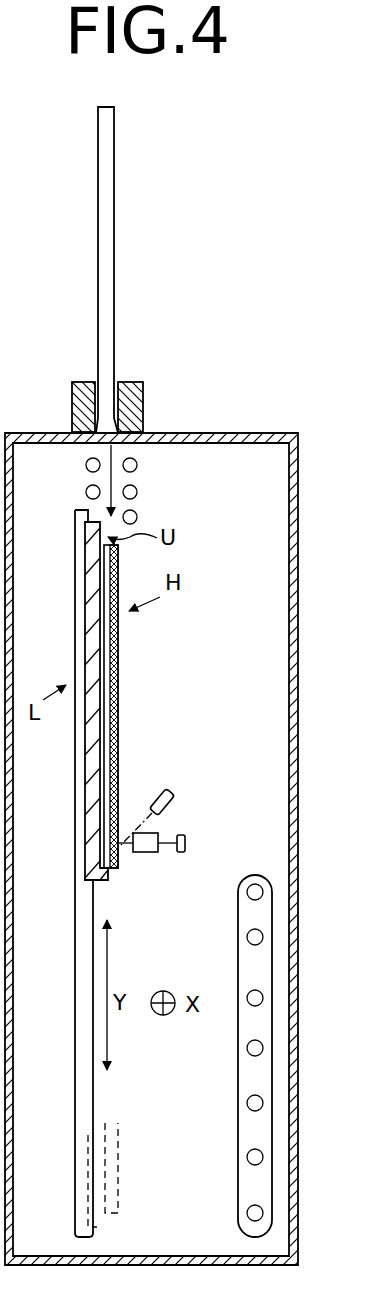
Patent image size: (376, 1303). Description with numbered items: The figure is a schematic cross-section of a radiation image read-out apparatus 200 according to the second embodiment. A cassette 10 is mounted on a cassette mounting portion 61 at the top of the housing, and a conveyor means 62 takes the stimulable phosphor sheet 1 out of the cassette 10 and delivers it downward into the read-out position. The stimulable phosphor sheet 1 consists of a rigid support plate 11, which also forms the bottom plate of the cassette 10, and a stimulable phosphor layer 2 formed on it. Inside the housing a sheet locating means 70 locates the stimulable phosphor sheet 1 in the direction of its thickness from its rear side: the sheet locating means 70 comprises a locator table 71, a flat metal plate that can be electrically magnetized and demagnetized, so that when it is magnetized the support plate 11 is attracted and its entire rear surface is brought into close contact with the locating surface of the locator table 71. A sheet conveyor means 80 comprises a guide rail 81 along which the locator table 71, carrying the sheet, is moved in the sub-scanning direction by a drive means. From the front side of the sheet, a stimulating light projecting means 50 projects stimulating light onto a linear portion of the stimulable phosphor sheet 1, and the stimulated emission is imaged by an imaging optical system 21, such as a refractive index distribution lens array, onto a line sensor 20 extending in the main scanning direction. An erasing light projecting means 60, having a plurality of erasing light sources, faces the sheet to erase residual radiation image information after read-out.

The radiation image read-out apparatus 200 is at (250, 282).
The cassette 10 is at (114, 163).
The cassette mounting portion 61 is at (138, 382).
The conveyor means 62 is at (150, 489).
The sheet locating means 70 is at (60, 516).
The locator table 71 is at (88, 582).
The stimulable phosphor sheet 1 is at (155, 706).
The support plate 11 is at (118, 677).
The stimulable phosphor layer 2 is at (116, 717).
The stimulating light projecting means 50 is at (165, 790).
The imaging optical system 21 is at (145, 853).
The line sensor 20 is at (181, 853).
The erasing light projecting means 60 is at (253, 873).
The guide rail 81 is at (80, 1025).
The sheet conveyor means 80 is at (64, 1174).